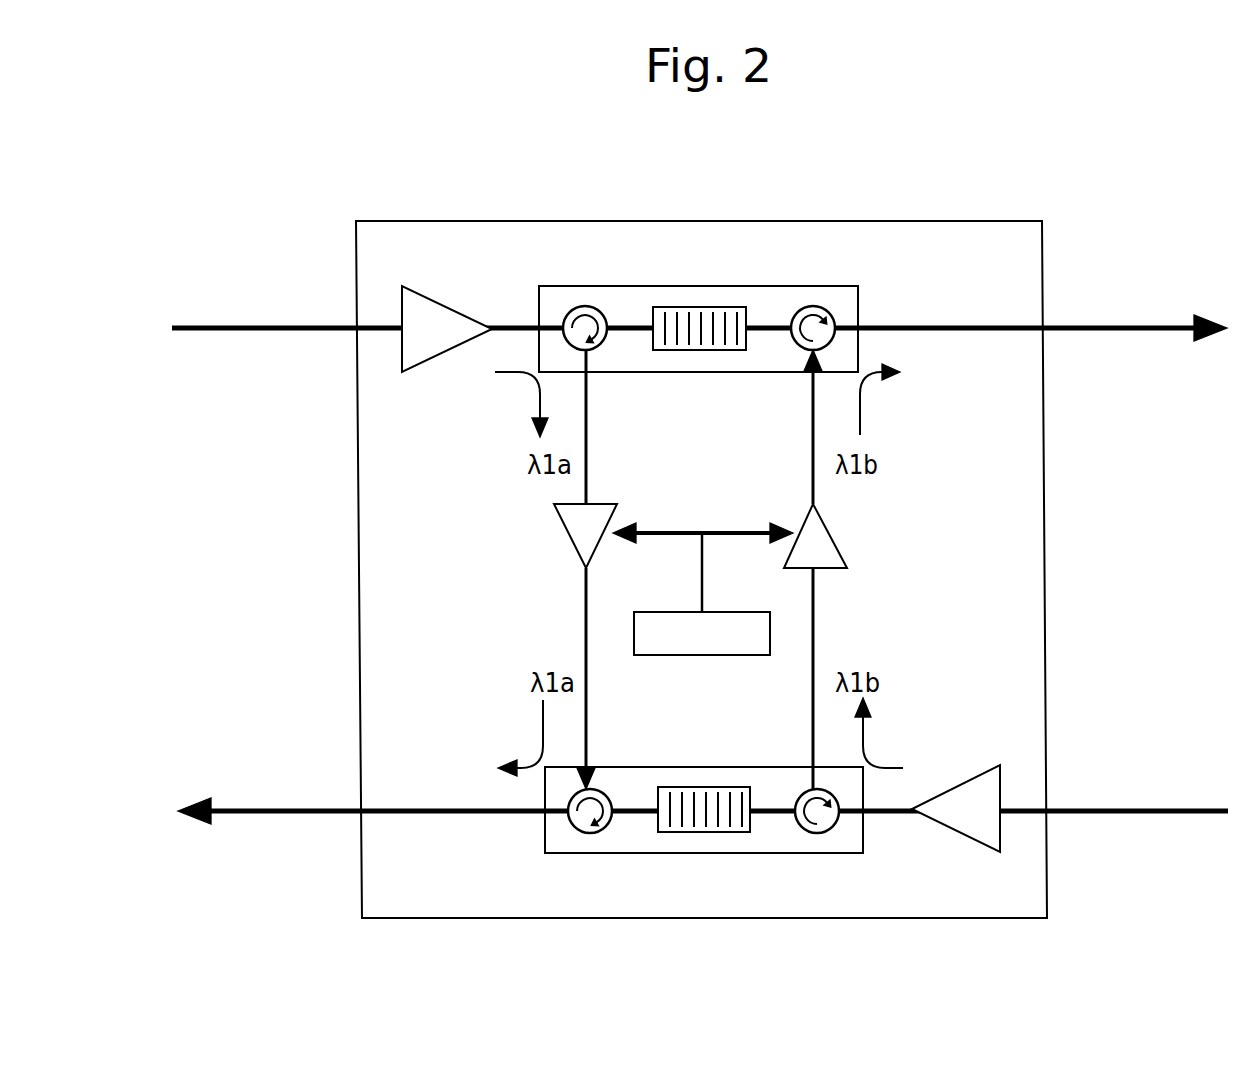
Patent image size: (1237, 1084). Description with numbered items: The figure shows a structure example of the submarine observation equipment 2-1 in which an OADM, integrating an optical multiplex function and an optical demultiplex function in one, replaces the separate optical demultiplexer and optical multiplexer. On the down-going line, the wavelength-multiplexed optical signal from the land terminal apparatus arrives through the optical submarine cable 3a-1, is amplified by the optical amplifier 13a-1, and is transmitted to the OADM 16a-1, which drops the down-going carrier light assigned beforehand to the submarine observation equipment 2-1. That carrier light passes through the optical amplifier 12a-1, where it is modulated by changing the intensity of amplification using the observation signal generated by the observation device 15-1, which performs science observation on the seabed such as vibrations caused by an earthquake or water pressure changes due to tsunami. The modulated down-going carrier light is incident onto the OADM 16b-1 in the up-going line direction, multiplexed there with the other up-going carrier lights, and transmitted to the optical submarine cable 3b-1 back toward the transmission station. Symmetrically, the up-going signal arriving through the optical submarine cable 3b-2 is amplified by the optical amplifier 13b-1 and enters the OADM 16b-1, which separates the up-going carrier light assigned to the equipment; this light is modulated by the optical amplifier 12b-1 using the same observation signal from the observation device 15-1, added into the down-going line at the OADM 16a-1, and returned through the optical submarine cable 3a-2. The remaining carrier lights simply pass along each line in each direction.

The submarine observation equipment 2-1 is at (672, 221).
The optical submarine cable 3a-1 is at (228, 326).
The optical submarine cable 3a-2 is at (1130, 325).
The optical submarine cable 3b-1 is at (272, 815).
The optical submarine cable 3b-2 is at (1160, 815).
The optical amplifier 13a-1 is at (455, 305).
The optical amplifier 13b-1 is at (950, 828).
The OADM 16a-1 is at (860, 288).
The OADM 16b-1 is at (530, 850).
The optical amplifier 12a-1 is at (592, 504).
The optical amplifier 12b-1 is at (805, 504).
The observation device 15-1 is at (710, 658).